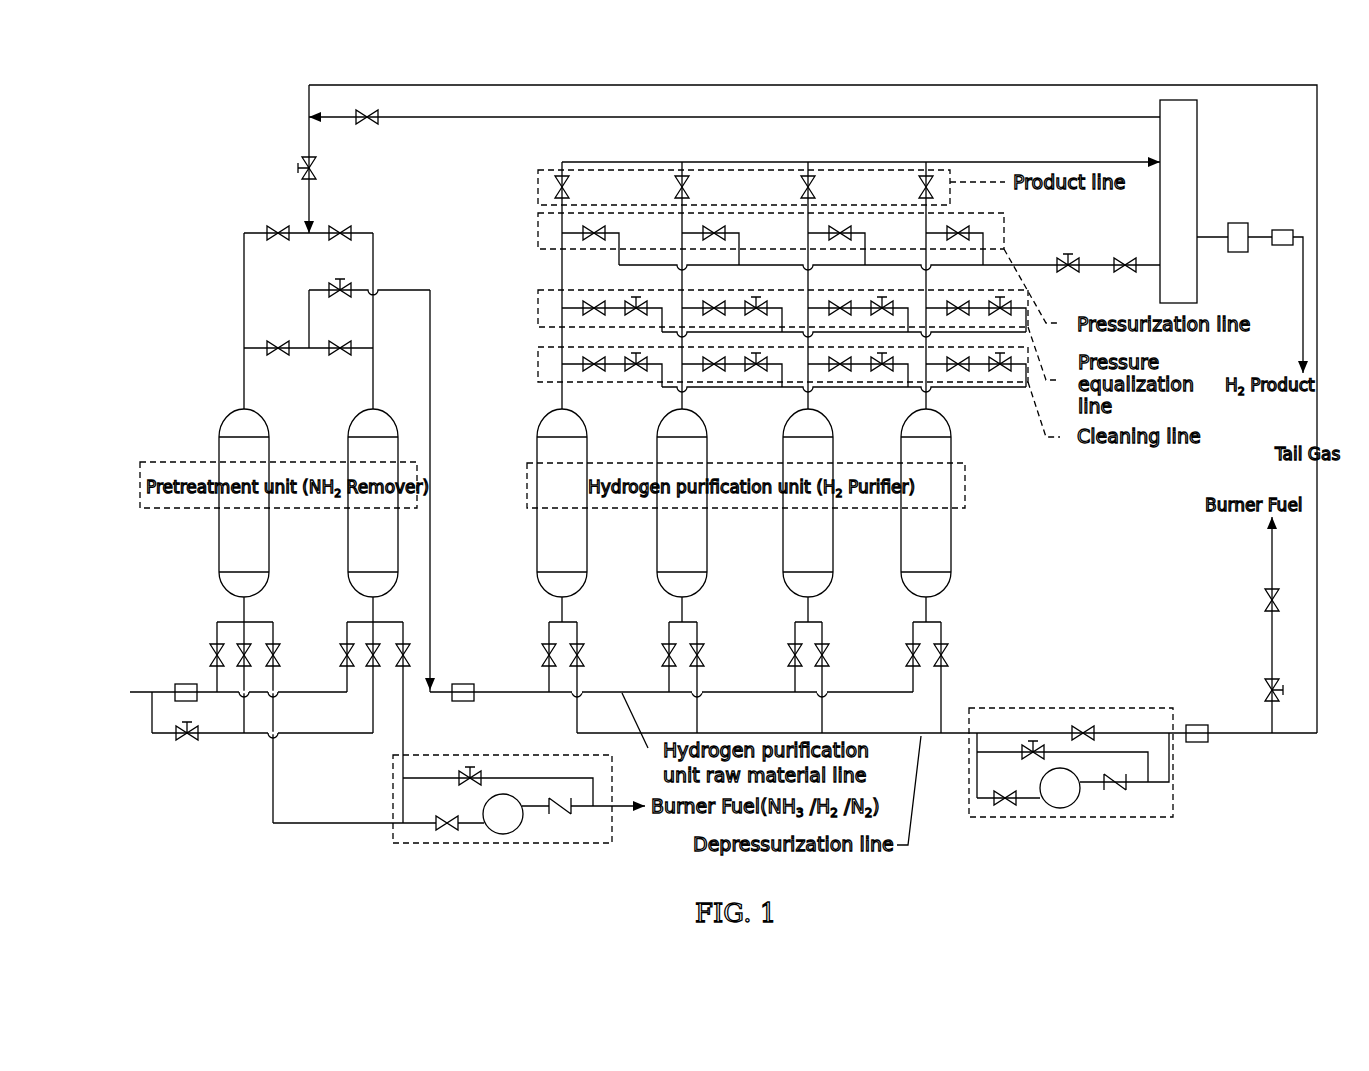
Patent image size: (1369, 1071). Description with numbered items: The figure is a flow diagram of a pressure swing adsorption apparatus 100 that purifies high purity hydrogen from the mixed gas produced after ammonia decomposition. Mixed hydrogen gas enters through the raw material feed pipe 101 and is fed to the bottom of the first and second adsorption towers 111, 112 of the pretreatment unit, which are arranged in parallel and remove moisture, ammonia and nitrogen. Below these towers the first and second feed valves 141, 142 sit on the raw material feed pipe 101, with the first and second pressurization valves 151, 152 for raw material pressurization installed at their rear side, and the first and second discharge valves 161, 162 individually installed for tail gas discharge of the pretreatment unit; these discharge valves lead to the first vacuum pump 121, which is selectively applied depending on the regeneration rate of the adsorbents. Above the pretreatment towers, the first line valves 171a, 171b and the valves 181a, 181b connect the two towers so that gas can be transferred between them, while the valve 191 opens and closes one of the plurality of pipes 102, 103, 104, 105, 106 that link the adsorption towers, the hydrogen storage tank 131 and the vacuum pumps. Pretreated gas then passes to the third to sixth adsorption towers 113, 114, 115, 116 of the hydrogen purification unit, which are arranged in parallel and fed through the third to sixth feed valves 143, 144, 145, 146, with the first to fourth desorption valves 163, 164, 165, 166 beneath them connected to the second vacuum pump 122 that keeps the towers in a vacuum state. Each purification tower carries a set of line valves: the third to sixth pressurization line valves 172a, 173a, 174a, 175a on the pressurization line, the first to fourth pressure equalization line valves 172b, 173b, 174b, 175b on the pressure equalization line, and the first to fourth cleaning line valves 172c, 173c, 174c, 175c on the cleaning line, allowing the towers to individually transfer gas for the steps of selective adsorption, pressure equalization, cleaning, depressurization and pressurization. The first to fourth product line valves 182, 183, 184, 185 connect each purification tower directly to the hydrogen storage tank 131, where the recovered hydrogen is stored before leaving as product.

The pressure swing adsorption apparatus 100 is at (240, 115).
The raw material feed pipe 101 is at (208, 698).
The pipe 102 is at (432, 420).
The pipe 103 is at (562, 282).
The pipe 104 is at (1005, 161).
The pipe 105 is at (552, 116).
The pipe 106 is at (476, 84).
The first adsorption tower of pretreatment unit 111 is at (219, 539).
The second adsorption tower of pretreatment unit 112 is at (348, 565).
The third adsorption tower of hydrogen purification unit 113 is at (537, 565).
The fourth adsorption tower of hydrogen purification unit 114 is at (657, 565).
The fifth adsorption tower of hydrogen purification unit 115 is at (783, 565).
The sixth adsorption tower of hydrogen purification unit 116 is at (901, 565).
The first vacuum pump 121 is at (500, 845).
The second vacuum pump 122 is at (1066, 820).
The hydrogen storage tank 131 is at (1197, 148).
The first feed valve 141 is at (209, 650).
The second feed valve 142 is at (343, 660).
The third feed valve 143 is at (549, 694).
The fourth feed valve 144 is at (668, 645).
The fifth feed valve 145 is at (794, 645).
The sixth feed valve 146 is at (912, 645).
The first pressurization valve 151 is at (239, 647).
The second pressurization valve 152 is at (370, 676).
The first discharge valve 161 is at (276, 647).
The second discharge valve 162 is at (430, 626).
The first desorption valve 163 is at (582, 655).
The second desorption valve 164 is at (702, 655).
The third desorption valve 165 is at (827, 655).
The fourth desorption valve 166 is at (946, 655).
The first line valve 171a is at (273, 227).
The first line valve 171b is at (273, 342).
The valve 181a is at (344, 227).
The valve 181b is at (342, 355).
The third pressurization line valve 172a is at (594, 226).
The first pressure equalization line valve 172b is at (600, 302).
The first cleaning line valve 172c is at (591, 371).
The fourth pressurization line valve 173a is at (714, 226).
The second pressure equalization line valve 173b is at (710, 302).
The second cleaning line valve 173c is at (711, 371).
The fifth pressurization line valve 174a is at (840, 226).
The third pressure equalization line valve 174b is at (836, 302).
The third cleaning line valve 174c is at (837, 371).
The sixth pressurization line valve 175a is at (959, 229).
The fourth pressure equalization line valve 175b is at (955, 302).
The fourth cleaning line valve 175c is at (956, 371).
The first product line valve 182 is at (556, 181).
The second product line valve 183 is at (676, 181).
The third product line valve 184 is at (802, 181).
The fourth product line valve 185 is at (920, 181).
The valve 191 is at (367, 107).